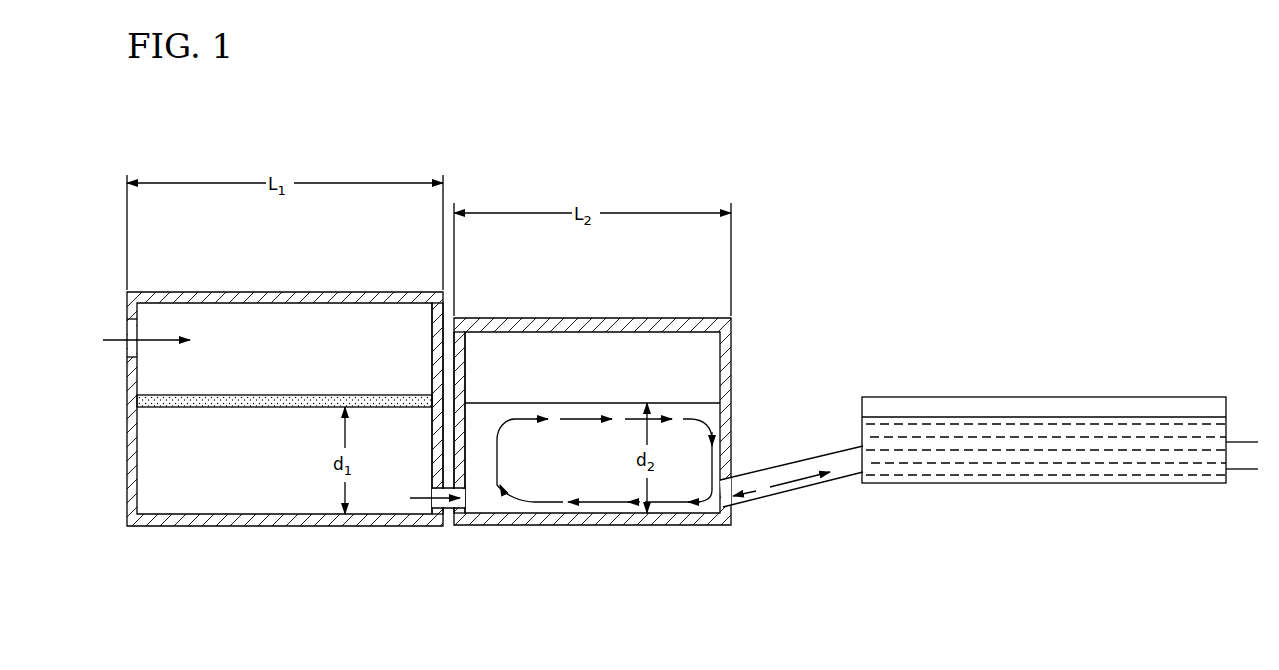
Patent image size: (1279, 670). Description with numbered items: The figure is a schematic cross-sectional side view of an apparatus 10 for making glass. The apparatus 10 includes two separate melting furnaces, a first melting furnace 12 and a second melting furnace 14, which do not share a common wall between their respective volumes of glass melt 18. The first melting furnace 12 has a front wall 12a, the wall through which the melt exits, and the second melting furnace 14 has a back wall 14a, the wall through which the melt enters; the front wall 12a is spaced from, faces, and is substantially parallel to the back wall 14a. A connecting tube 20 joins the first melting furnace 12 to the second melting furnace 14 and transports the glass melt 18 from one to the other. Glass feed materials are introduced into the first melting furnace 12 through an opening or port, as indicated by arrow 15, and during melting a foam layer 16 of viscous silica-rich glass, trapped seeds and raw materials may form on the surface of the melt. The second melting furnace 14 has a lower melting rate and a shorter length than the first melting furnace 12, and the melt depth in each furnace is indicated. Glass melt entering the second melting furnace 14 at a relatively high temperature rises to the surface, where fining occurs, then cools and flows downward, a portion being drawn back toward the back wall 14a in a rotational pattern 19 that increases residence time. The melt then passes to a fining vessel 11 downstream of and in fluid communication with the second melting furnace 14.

The apparatus for making glass 10 is at (547, 147).
The fining vessel 11 is at (1077, 396).
The first melting furnace 12 is at (188, 530).
The front wall 12a is at (430, 337).
The second melting furnace 14 is at (737, 329).
The back wall 14a is at (465, 355).
The arrow indicating feed of glass feed materials 15 is at (151, 338).
The foam layer 16 is at (275, 395).
The glass melt 18 is at (290, 485).
The rotational pattern 19 is at (470, 500).
The connecting tube 20 is at (446, 530).